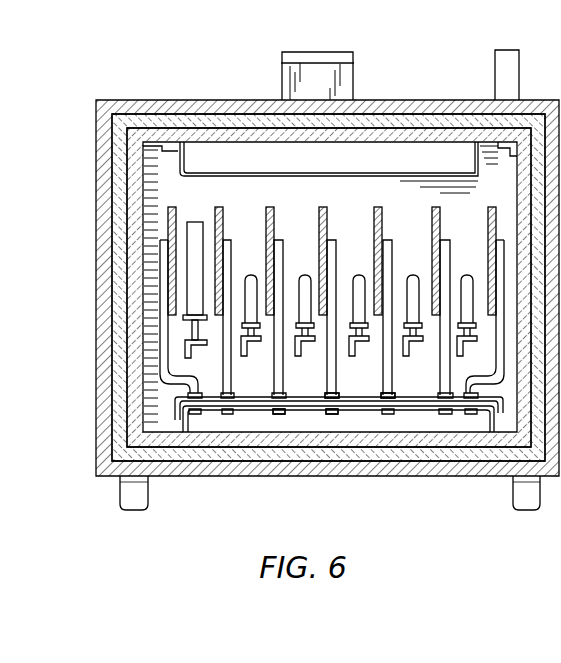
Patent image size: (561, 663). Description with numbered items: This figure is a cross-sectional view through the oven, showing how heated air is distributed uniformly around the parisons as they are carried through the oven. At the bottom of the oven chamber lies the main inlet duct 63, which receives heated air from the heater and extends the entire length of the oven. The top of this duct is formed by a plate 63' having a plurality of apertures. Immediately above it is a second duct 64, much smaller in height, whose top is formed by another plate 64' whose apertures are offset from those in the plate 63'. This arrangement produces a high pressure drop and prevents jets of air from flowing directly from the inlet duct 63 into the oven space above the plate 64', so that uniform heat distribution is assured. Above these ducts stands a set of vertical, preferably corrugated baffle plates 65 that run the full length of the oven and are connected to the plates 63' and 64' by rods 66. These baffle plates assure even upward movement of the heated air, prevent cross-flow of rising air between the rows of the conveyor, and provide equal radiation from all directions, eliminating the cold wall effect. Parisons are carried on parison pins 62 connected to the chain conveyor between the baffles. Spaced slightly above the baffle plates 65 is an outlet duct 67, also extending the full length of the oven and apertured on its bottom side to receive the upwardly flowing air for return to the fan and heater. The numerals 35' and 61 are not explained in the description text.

The radiant heating plates 35' is at (332, 249).
The burner bracket 61 is at (185, 352).
The parison pins 62 is at (302, 275).
The main inlet duct 63 is at (339, 414).
The plate 63' is at (297, 456).
The second duct 64 is at (338, 419).
The plate 64' is at (360, 448).
The baffle plates 65 is at (168, 231).
The rods 66 is at (162, 288).
The outlet duct 67 is at (334, 177).